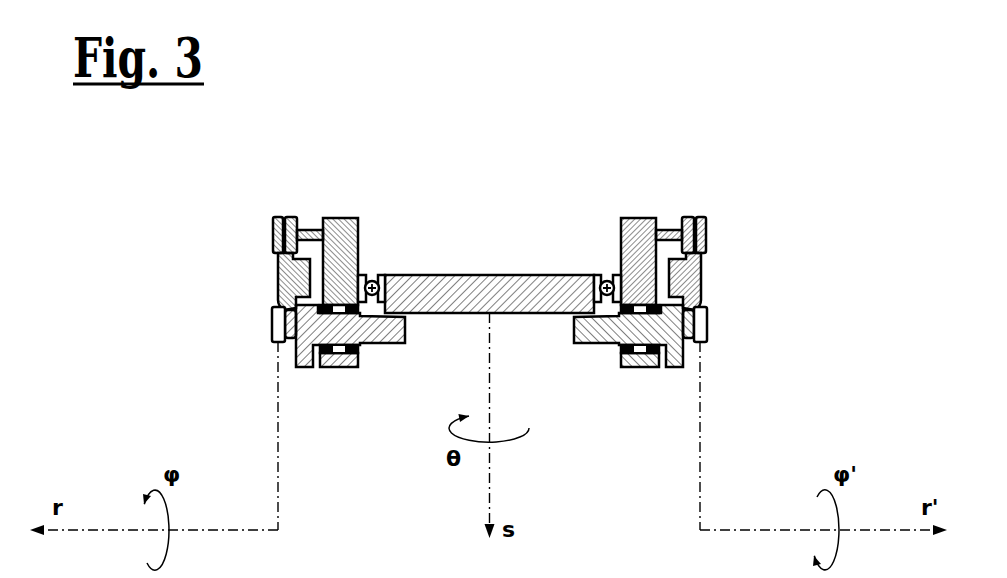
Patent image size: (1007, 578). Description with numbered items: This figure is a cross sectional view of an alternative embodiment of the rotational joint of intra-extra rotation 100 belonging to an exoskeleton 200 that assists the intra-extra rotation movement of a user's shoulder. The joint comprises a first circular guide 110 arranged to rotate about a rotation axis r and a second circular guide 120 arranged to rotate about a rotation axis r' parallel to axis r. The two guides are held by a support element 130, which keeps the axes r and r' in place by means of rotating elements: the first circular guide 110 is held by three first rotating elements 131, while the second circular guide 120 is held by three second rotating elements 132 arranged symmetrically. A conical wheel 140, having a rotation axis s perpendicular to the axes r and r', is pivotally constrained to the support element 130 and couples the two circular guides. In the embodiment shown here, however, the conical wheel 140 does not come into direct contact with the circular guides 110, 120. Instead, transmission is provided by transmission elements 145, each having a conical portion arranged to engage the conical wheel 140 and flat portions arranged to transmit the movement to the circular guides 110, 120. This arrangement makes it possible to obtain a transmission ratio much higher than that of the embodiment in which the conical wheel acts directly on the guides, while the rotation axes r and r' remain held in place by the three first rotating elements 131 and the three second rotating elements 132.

The rotational joint of intra-extra rotation 100 is at (658, 224).
The first circular guide 110 is at (278, 287).
The second circular guide 120 is at (700, 282).
The support element 130 is at (343, 238).
The first rotating elements 131 is at (272, 215).
The second rotating elements 132 is at (706, 216).
The conical wheel 140 is at (505, 275).
The transmission elements 145 is at (400, 333).
The exoskeleton 200 is at (740, 109).